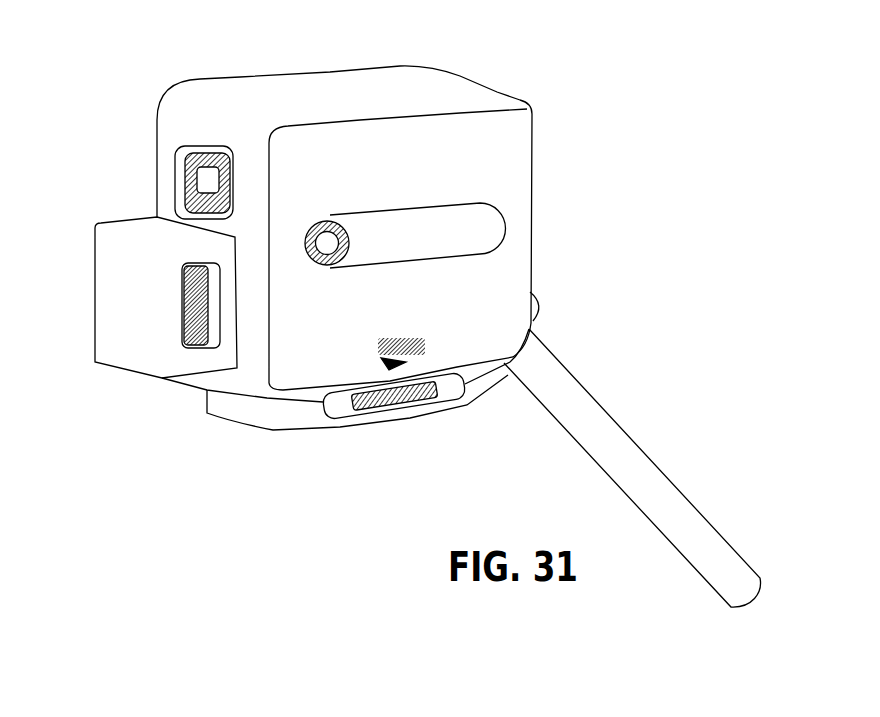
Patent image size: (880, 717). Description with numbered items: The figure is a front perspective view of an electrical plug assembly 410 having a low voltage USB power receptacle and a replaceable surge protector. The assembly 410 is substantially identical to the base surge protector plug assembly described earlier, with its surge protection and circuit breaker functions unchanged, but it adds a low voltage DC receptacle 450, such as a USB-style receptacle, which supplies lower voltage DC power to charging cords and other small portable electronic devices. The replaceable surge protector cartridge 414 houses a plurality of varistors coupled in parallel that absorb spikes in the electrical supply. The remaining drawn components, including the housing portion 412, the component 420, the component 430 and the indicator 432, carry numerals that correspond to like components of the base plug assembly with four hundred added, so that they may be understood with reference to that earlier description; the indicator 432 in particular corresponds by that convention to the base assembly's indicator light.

The electrical plug assembly 410 is at (583, 128).
The housing 412 is at (284, 98).
The surge protector cartridge 414 is at (253, 423).
The handle 420 is at (650, 453).
The button 430 is at (192, 185).
The protected indicator 432 is at (338, 222).
The low voltage DC receptacle 450 is at (168, 348).